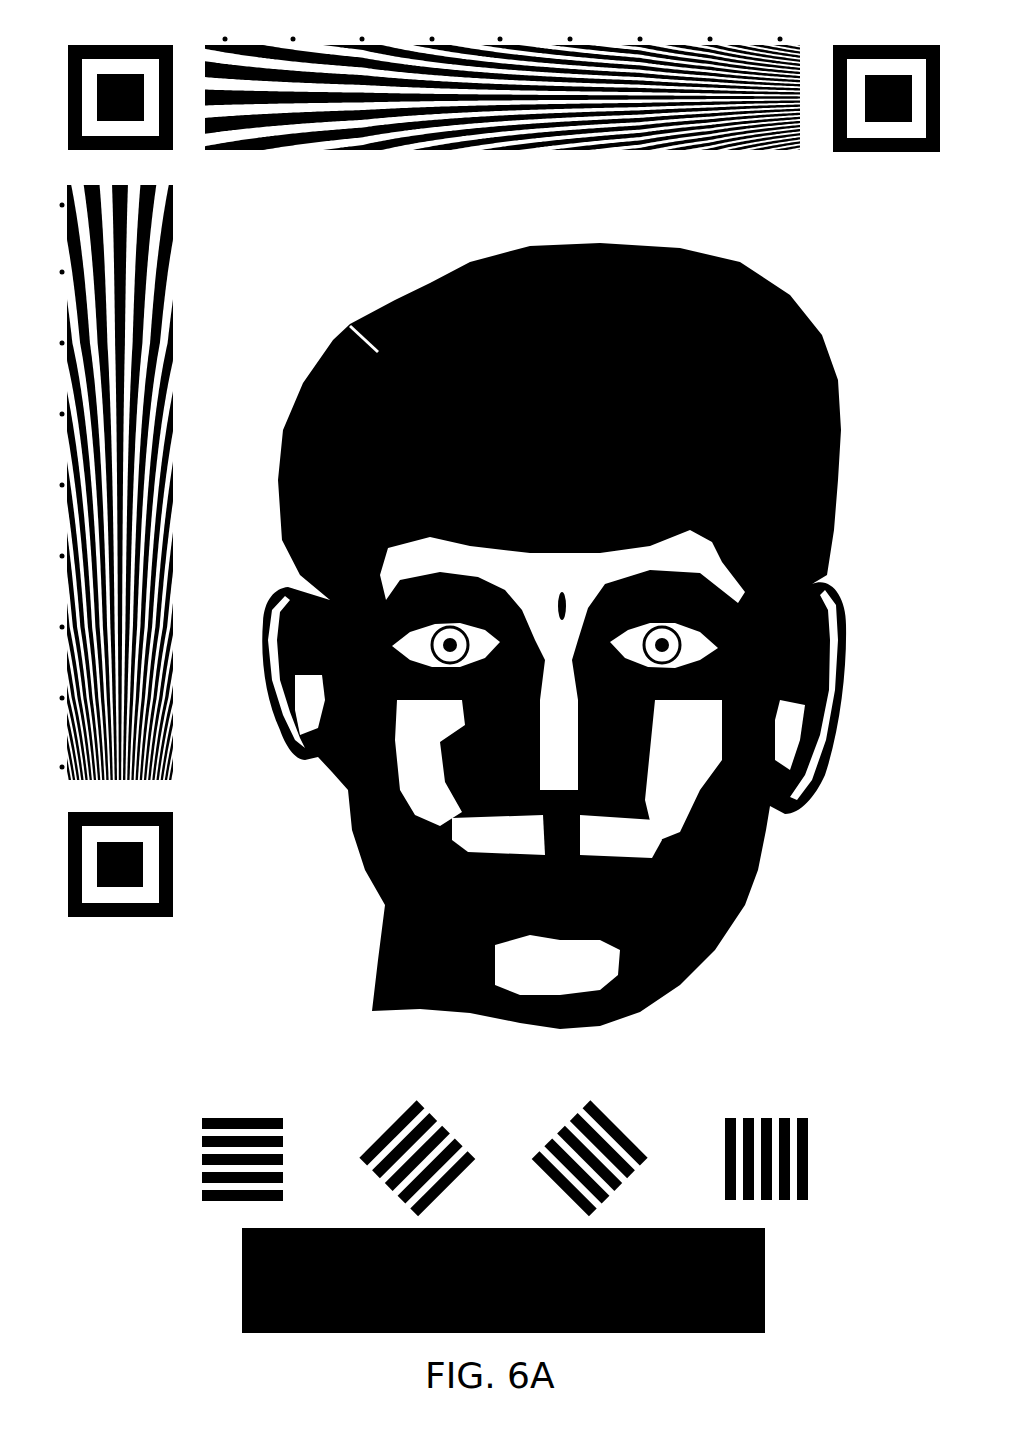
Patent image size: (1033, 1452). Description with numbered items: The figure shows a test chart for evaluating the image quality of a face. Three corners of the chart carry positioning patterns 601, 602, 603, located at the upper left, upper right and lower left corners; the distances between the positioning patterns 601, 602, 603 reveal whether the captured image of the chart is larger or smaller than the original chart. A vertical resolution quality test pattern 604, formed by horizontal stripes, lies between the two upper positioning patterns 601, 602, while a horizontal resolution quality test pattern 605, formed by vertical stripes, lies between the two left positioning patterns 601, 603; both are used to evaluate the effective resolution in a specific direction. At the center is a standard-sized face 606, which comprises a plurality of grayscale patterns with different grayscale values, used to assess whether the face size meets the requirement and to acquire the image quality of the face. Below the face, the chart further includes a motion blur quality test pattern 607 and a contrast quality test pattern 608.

The positioning pattern 601 is at (134, 182).
The positioning pattern 602 is at (911, 195).
The positioning pattern 603 is at (127, 956).
The vertical resolution quality test pattern 604 is at (513, 188).
The horizontal resolution quality test pattern 605 is at (227, 481).
The standard-sized face 606 is at (844, 323).
The motion blur quality test pattern 607 is at (901, 1173).
The contrast quality test pattern 608 is at (887, 1290).